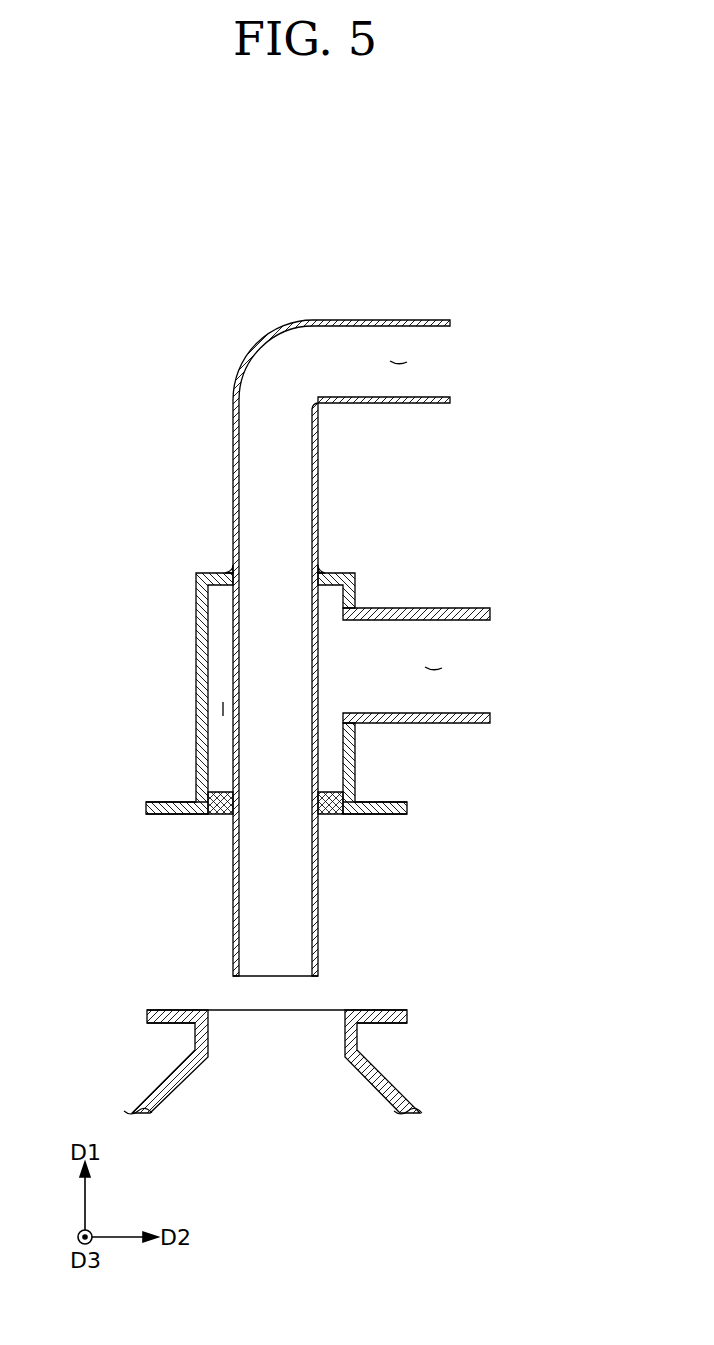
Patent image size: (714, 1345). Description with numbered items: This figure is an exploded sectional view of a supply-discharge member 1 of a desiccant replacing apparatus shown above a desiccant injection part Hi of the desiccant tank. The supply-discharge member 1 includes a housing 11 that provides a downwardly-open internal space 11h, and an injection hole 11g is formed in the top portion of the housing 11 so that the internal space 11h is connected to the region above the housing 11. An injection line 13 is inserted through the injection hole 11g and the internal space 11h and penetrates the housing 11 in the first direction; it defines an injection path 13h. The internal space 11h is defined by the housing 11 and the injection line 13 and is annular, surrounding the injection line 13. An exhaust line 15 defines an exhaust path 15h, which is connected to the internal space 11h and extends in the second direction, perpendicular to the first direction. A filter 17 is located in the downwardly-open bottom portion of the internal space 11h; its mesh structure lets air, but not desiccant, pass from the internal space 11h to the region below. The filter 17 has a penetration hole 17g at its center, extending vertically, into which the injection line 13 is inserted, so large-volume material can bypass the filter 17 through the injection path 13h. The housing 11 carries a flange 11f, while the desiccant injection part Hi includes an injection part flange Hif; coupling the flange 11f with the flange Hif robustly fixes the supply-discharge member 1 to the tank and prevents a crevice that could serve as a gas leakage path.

The supply-discharge member 1 is at (537, 224).
The injection line 13 is at (360, 320).
The injection path 13h is at (400, 362).
The exhaust line 15 is at (400, 608).
The exhaust path 15h is at (433, 668).
The housing 11 is at (197, 665).
The injection hole 11g is at (233, 573).
The internal space 11h is at (222, 712).
The flange 11f is at (155, 808).
The filter 17 is at (330, 815).
The penetration hole 17g is at (222, 815).
The desiccant injection part Hi is at (415, 1040).
The injection part flange Hif is at (148, 1016).